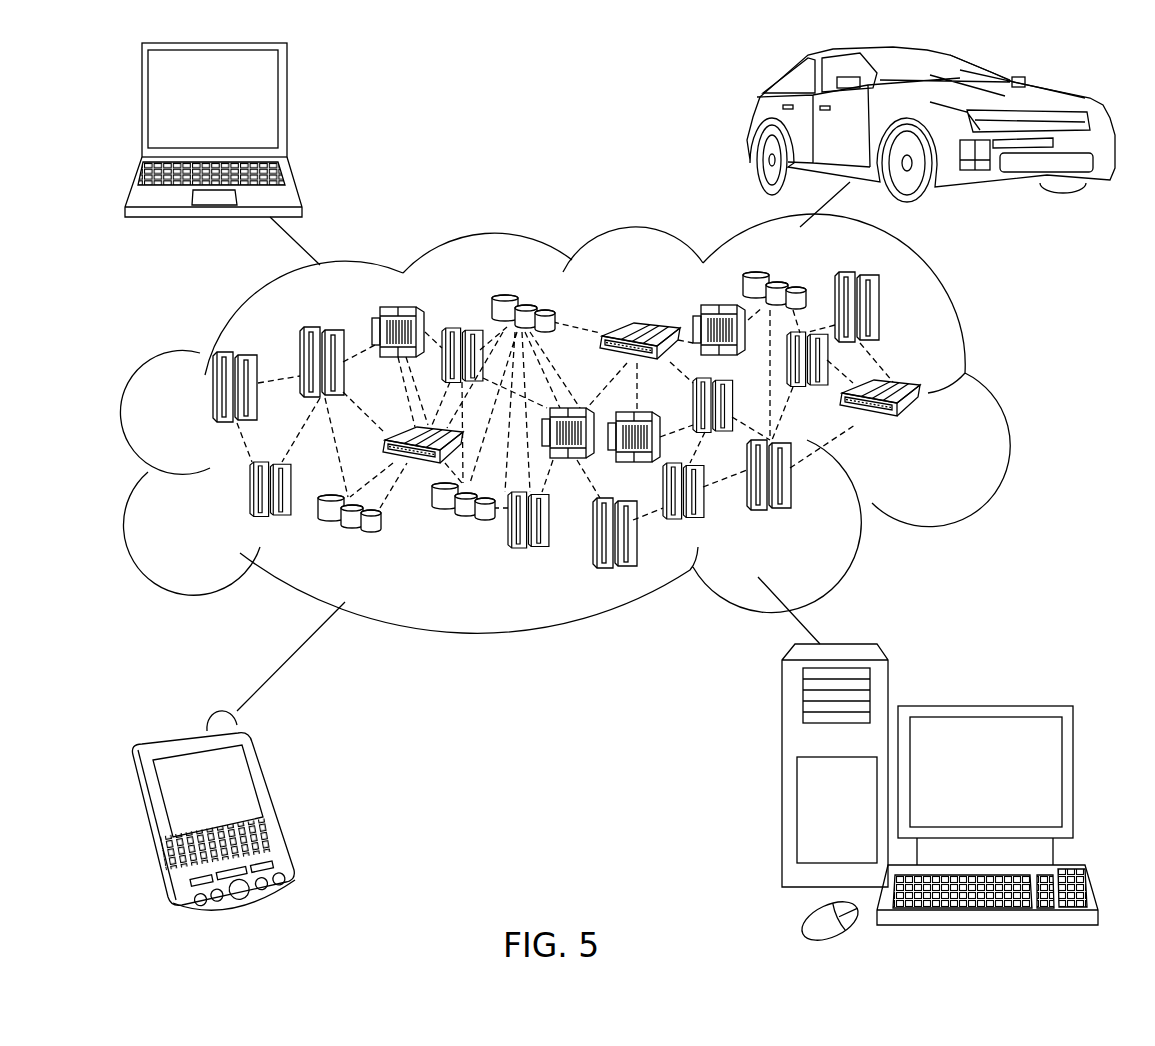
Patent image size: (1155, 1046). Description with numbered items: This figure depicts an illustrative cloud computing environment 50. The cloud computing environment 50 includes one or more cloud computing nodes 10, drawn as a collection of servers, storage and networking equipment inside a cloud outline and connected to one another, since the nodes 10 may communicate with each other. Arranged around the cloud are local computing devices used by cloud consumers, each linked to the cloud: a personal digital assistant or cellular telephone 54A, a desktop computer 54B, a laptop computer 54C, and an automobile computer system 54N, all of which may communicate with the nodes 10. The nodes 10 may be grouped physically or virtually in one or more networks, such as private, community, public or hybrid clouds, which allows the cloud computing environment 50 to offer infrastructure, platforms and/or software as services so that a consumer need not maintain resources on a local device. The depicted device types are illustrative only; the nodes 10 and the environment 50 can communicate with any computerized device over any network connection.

The cloud computing environment 50 is at (983, 397).
The cloud computing nodes 10 is at (932, 434).
The personal digital assistant or cellular telephone 54A is at (277, 800).
The desktop computer 54B is at (982, 705).
The laptop computer 54C is at (285, 108).
The automobile computer system 54N is at (750, 122).